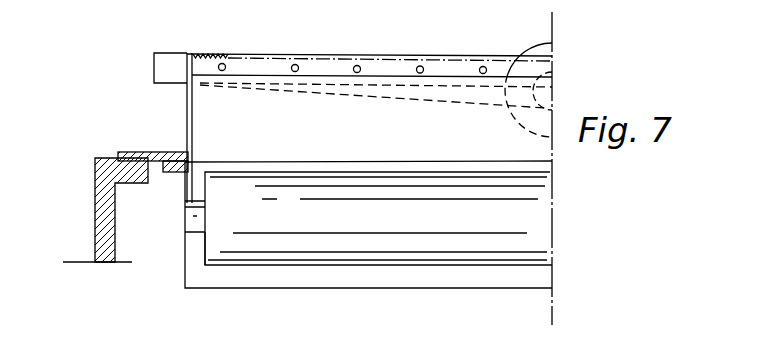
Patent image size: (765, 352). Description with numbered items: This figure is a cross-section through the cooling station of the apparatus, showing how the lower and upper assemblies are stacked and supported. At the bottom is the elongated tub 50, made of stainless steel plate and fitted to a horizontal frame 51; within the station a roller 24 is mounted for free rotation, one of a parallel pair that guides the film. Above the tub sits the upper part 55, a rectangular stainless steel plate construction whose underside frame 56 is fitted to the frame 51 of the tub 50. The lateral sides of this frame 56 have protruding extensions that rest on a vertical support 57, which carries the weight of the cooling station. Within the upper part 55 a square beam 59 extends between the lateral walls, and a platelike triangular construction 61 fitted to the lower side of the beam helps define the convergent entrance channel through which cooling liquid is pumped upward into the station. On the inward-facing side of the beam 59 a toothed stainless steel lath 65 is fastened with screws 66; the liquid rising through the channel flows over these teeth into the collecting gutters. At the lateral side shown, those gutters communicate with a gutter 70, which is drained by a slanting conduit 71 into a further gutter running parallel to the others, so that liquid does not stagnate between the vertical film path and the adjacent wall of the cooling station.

The roller 24 is at (543, 221).
The tub 50 is at (308, 288).
The frame 51 is at (177, 175).
The upper part 55 is at (186, 106).
The frame 56 is at (168, 150).
The vertical support 57 is at (98, 203).
The square beam 59 is at (387, 82).
The triangular construction 61 is at (272, 140).
The toothed lath 65 is at (248, 68).
The screws 66 is at (354, 70).
The gutter 70 is at (160, 63).
The slanting conduit 71 is at (445, 92).